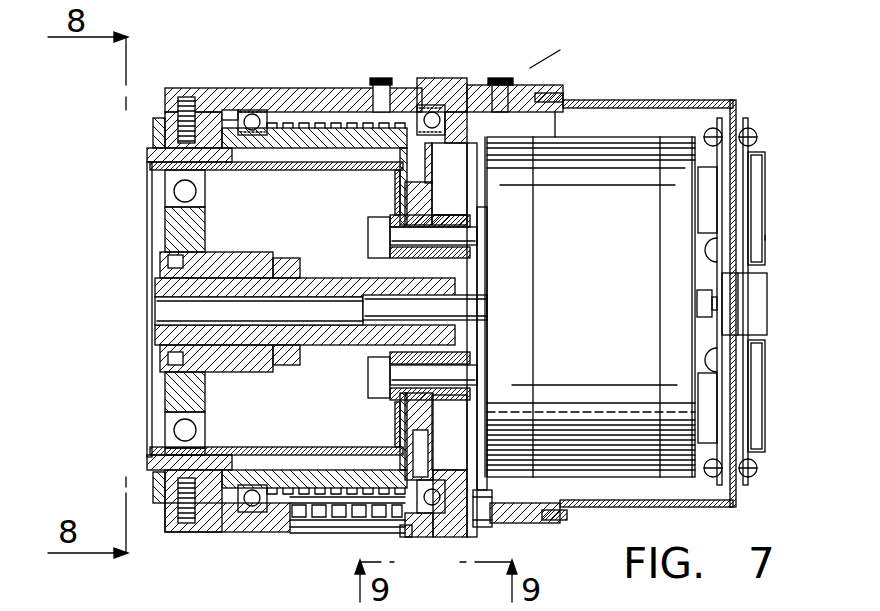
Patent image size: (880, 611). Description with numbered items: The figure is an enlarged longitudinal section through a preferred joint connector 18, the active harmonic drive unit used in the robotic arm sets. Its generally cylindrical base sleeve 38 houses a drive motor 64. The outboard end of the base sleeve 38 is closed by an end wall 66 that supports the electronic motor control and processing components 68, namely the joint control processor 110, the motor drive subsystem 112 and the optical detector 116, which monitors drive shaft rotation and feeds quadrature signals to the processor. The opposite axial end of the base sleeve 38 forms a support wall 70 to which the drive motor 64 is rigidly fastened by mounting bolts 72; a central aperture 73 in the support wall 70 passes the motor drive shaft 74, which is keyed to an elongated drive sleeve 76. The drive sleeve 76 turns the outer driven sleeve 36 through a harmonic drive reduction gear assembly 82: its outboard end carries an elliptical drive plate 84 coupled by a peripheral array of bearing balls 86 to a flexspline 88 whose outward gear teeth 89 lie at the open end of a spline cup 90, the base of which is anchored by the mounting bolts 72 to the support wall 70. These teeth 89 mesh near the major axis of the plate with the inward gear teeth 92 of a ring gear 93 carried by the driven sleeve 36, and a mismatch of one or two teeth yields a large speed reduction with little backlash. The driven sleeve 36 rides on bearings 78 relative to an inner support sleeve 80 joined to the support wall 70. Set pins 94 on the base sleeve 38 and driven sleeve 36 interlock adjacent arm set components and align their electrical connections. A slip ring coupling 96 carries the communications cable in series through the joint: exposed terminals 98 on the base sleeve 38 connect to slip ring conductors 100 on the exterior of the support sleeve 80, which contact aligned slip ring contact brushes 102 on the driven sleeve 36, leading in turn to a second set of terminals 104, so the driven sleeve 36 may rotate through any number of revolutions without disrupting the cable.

The joint connector 18 is at (532, 70).
The driven sleeve 36 is at (282, 88).
The base sleeve 38 is at (545, 85).
The drive motor 64 is at (612, 157).
The end wall 66 is at (736, 103).
The electronic motor control and processing components 68 is at (790, 252).
The support wall 70 is at (427, 197).
The mounting bolts 72 is at (465, 375).
The central aperture 73 is at (420, 268).
The motor drive shaft 74 is at (468, 305).
The drive sleeve 76 is at (320, 347).
The bearings 78 is at (250, 112).
The inner support sleeve 80 is at (307, 143).
The harmonic drive reduction gear assembly 82 is at (132, 305).
The elliptical drive plate 84 is at (175, 391).
The bearing balls 86 is at (202, 434).
The flexspline 88 is at (228, 457).
The gear teeth 89 is at (152, 456).
The spline cup 90 is at (268, 148).
The gear teeth 92 is at (150, 470).
The ring gear 93 is at (153, 128).
The set pins 94 is at (382, 78).
The slip ring coupling 96 is at (297, 537).
The terminals 98 is at (482, 495).
The slip ring conductors 100 is at (353, 487).
The slip ring contact brushes 102 is at (323, 518).
The terminals 104 is at (410, 532).
The joint control processor 110 is at (755, 182).
The motor drive subsystem 112 is at (758, 398).
The optical detector 116 is at (755, 302).